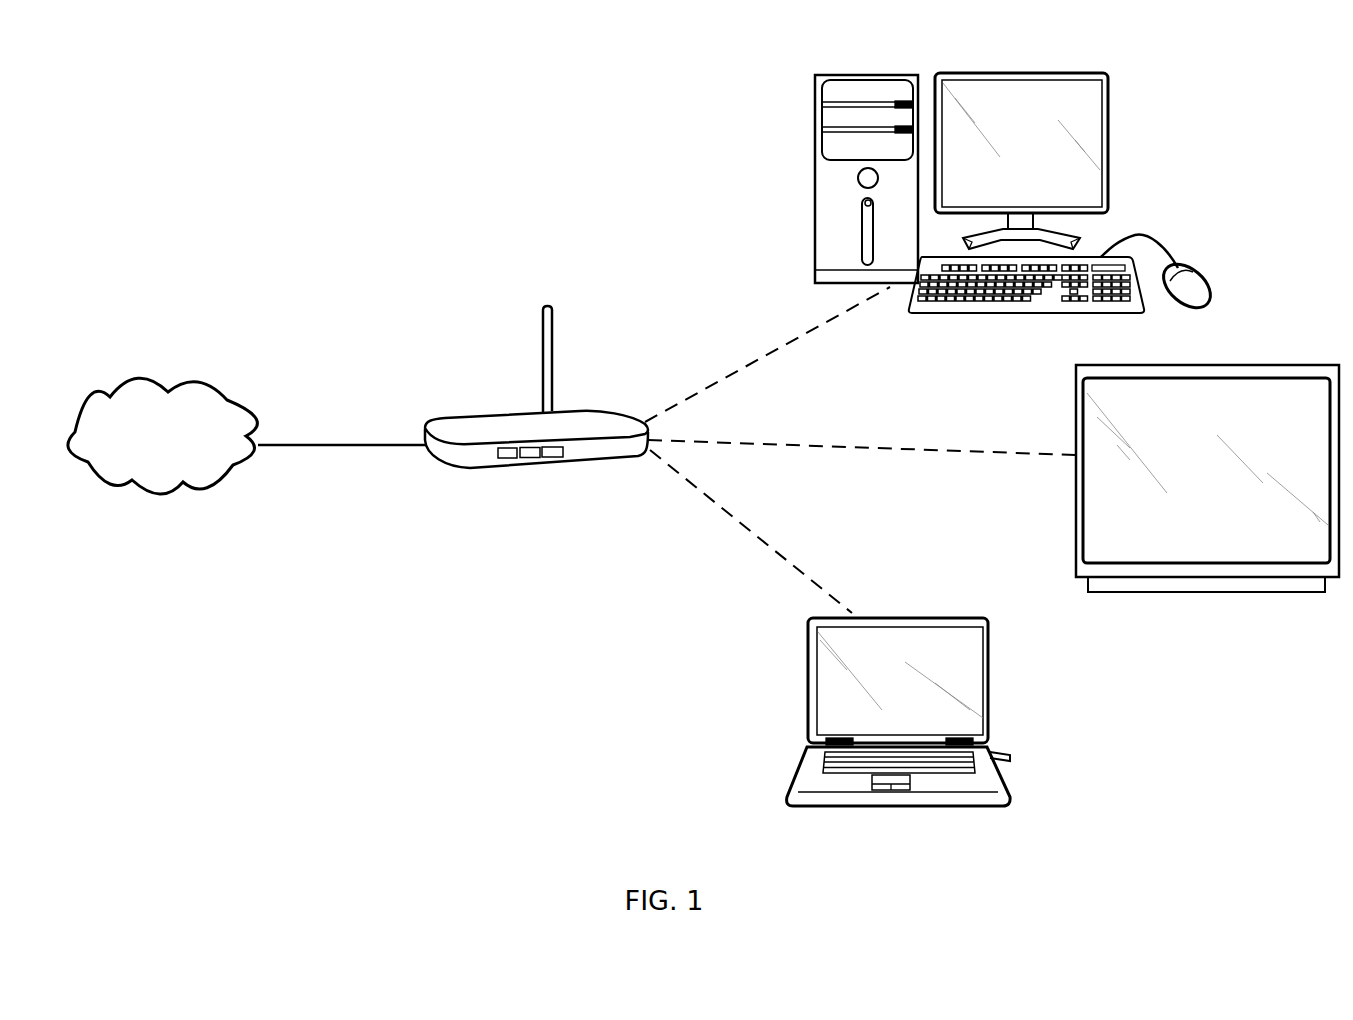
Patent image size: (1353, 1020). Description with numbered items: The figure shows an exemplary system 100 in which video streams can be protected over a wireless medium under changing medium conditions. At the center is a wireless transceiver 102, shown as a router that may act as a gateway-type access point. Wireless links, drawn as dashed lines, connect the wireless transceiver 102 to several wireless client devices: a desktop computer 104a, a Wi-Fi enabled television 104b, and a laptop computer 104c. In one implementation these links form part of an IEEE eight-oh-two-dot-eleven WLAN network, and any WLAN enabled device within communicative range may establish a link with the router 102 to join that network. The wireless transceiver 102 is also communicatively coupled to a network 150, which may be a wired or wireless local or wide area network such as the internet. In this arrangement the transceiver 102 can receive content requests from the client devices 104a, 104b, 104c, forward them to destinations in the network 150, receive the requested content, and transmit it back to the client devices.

The system 100 is at (425, 152).
The wireless transceiver 102 is at (476, 415).
The desktop computer 104a is at (1066, 73).
The Wi-Fi enabled television 104b is at (1277, 365).
The laptop computer 104c is at (930, 618).
The network 150 is at (183, 457).